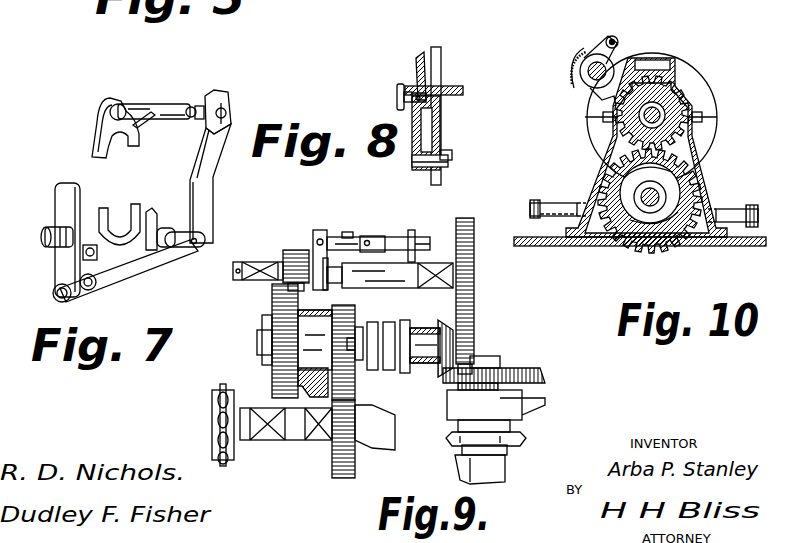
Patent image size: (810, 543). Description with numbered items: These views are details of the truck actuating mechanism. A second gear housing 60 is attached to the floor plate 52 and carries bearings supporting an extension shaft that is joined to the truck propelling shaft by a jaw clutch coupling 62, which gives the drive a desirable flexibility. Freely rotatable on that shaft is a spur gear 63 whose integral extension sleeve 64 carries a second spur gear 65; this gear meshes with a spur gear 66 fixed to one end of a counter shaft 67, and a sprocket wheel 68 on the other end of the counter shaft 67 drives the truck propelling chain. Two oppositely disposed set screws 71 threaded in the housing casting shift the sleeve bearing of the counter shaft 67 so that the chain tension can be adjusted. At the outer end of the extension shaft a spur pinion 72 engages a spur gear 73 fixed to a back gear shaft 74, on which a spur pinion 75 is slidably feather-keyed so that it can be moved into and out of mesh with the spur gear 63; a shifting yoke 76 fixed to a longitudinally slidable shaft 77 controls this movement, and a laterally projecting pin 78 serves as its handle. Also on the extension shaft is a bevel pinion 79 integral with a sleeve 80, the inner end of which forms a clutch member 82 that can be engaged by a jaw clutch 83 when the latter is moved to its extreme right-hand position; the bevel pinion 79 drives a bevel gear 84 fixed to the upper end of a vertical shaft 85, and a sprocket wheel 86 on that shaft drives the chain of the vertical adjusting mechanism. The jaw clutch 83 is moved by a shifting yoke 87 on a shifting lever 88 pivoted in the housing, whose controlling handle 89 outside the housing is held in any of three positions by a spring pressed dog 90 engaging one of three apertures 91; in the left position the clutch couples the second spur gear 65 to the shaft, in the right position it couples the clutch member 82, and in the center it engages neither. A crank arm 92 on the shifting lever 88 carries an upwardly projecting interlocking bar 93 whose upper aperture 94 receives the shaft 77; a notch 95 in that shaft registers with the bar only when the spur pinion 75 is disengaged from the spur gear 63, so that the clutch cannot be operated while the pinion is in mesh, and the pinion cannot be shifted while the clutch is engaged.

In FIG. 10, the floor plate 52 is at (572, 247).
In FIG. 8, the second gear housing 60 is at (448, 90).
In FIG. 10, the second gear housing 60 is at (670, 60).
In FIG. 9, the jaw clutch coupling 62 is at (262, 322).
In FIG. 10, the spur gear 63 is at (603, 114).
In FIG. 9, the spur gear 63 is at (272, 386).
In FIG. 9, the extension sleeve 64 is at (312, 322).
In FIG. 10, the second spur gear 65 is at (690, 98).
In FIG. 9, the second spur gear 65 is at (355, 310).
In FIG. 10, the spur gear 66 is at (700, 180).
In FIG. 9, the spur gear 66 is at (343, 478).
In FIG. 9, the counter shaft 67 is at (296, 440).
In FIG. 9, the sprocket wheel 68 is at (220, 456).
In FIG. 10, the set screws 71 is at (566, 203).
In FIG. 9, the spur pinion 72 is at (476, 326).
In FIG. 9, the spur gear 73 is at (476, 250).
In FIG. 10, the back gear shaft 74 is at (582, 78).
In FIG. 9, the back gear shaft 74 is at (352, 263).
In FIG. 9, the spur pinion 75 is at (298, 250).
In FIG. 7, the shifting yoke 76 is at (95, 130).
In FIG. 10, the shifting yoke 76 is at (608, 38).
In FIG. 9, the shifting yoke 76 is at (322, 230).
In FIG. 7, the shaft 77 is at (172, 104).
In FIG. 10, the shaft 77 is at (618, 40).
In FIG. 9, the shaft 77 is at (395, 237).
In FIG. 7, the pin 78 is at (146, 124).
In FIG. 9, the pin 78 is at (372, 240).
In FIG. 9, the bevel pinion 79 is at (478, 312).
In FIG. 9, the sleeve 80 is at (480, 433).
In FIG. 9, the clutch member 82 is at (402, 326).
In FIG. 9, the jaw clutch 83 is at (372, 372).
In FIG. 9, the bevel gear 84 is at (535, 376).
In FIG. 9, the vertical shaft 85 is at (490, 358).
In FIG. 9, the sprocket wheel 86 is at (512, 438).
In FIG. 7, the shifting yoke 87 is at (106, 222).
In FIG. 7, the shifting lever 88 is at (156, 216).
In FIG. 7, the controlling handle 89 is at (82, 190).
In FIG. 8, the controlling handle 89 is at (418, 62).
In FIG. 7, the spring pressed dog 90 is at (45, 240).
In FIG. 8, the spring pressed dog 90 is at (397, 96).
In FIG. 8, the apertures 91 is at (440, 98).
In FIG. 7, the crank arm 92 is at (182, 250).
In FIG. 7, the interlocking bar 93 is at (215, 196).
In FIG. 7, the aperture 94 is at (230, 102).
In FIG. 7, the notch 95 is at (194, 106).